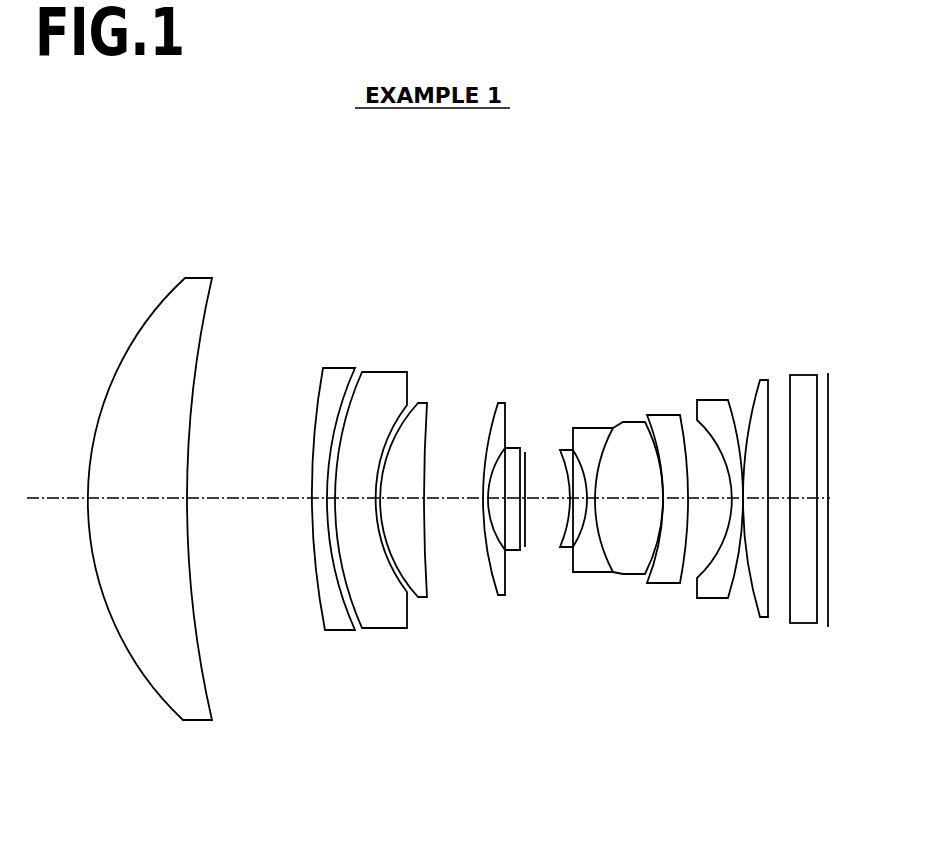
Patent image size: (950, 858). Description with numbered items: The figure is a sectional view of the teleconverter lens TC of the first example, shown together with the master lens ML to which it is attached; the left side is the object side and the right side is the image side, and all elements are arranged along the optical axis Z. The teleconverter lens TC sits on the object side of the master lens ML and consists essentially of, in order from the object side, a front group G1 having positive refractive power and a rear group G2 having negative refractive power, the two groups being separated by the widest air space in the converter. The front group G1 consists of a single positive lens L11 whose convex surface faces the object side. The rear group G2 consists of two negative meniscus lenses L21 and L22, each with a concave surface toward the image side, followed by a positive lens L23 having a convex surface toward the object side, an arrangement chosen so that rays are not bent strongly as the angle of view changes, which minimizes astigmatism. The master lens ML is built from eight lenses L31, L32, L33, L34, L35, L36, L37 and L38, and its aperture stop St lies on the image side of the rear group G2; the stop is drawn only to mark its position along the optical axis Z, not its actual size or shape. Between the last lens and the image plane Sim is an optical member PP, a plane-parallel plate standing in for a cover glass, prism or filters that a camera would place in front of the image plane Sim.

The teleconverter lens TC is at (350, 182).
The front group G1 is at (205, 220).
The rear group G2 is at (407, 220).
The master lens ML is at (742, 223).
The positive lens L11 is at (196, 281).
The negative meniscus lens L21 is at (340, 375).
The negative meniscus lens L22 is at (380, 377).
The positive lens L23 is at (422, 400).
The lens L31 is at (502, 403).
The lens L32 is at (512, 452).
The lens L33 is at (561, 449).
The lens L34 is at (601, 428).
The lens L35 is at (633, 421).
The lens L36 is at (670, 415).
The lens L37 is at (713, 405).
The lens L38 is at (761, 381).
The aperture stop St is at (525, 548).
The optical member PP is at (805, 625).
The image plane Sim is at (828, 610).
The optical axis Z is at (43, 497).